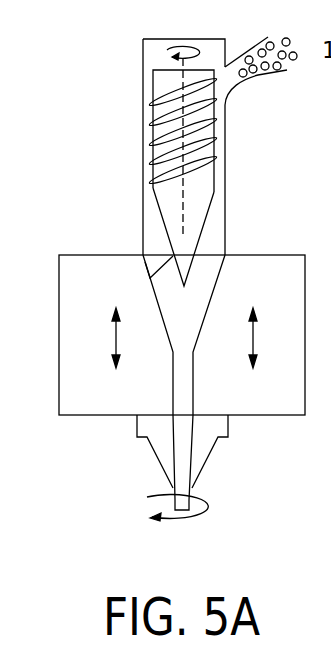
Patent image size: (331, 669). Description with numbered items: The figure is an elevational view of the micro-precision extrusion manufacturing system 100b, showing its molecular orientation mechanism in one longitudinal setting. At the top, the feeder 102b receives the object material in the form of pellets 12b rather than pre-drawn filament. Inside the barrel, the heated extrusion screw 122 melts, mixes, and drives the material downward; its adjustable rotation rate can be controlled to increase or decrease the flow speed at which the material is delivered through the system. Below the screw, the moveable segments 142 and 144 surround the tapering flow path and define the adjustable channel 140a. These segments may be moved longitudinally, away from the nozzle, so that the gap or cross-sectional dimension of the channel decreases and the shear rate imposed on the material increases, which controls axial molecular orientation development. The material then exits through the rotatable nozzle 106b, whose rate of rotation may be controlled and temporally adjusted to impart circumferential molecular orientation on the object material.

The micro-precision extrusion manufacturing system 100b is at (121, 39).
The feeder 102b is at (233, 96).
The pellets 12b is at (298, 60).
The extrusion screw 122 is at (207, 152).
The adjustable channel 140a is at (145, 262).
The moveable segment 142 is at (86, 368).
The moveable segment 144 is at (260, 275).
The rotatable nozzle 106b is at (197, 465).